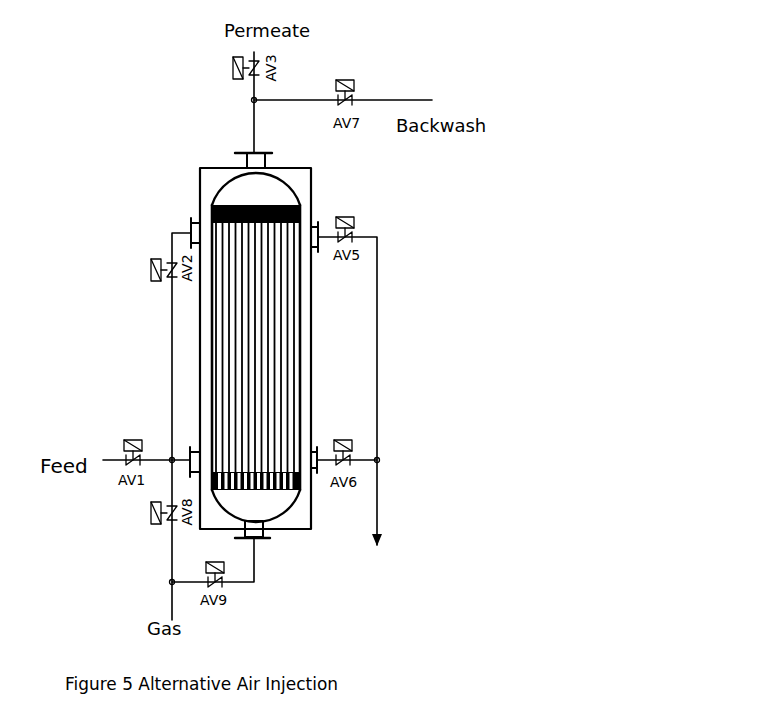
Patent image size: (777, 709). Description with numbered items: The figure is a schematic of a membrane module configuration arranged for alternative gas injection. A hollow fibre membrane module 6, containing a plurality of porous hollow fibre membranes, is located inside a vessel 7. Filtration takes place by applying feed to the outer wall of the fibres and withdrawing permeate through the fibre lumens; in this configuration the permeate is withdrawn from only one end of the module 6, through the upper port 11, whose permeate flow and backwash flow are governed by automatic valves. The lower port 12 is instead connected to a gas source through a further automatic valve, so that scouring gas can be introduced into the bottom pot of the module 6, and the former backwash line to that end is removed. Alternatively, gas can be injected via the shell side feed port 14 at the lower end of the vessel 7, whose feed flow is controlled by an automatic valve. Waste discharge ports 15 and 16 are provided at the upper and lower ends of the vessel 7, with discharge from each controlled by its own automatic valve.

The vessel 7 is at (198, 191).
The hollow fibre membrane module 6 is at (224, 426).
The port 11 is at (264, 165).
The port 12 is at (260, 544).
The feed inlet port 14 is at (185, 469).
The waste discharge port 15 is at (318, 223).
The waste discharge port 16 is at (313, 450).